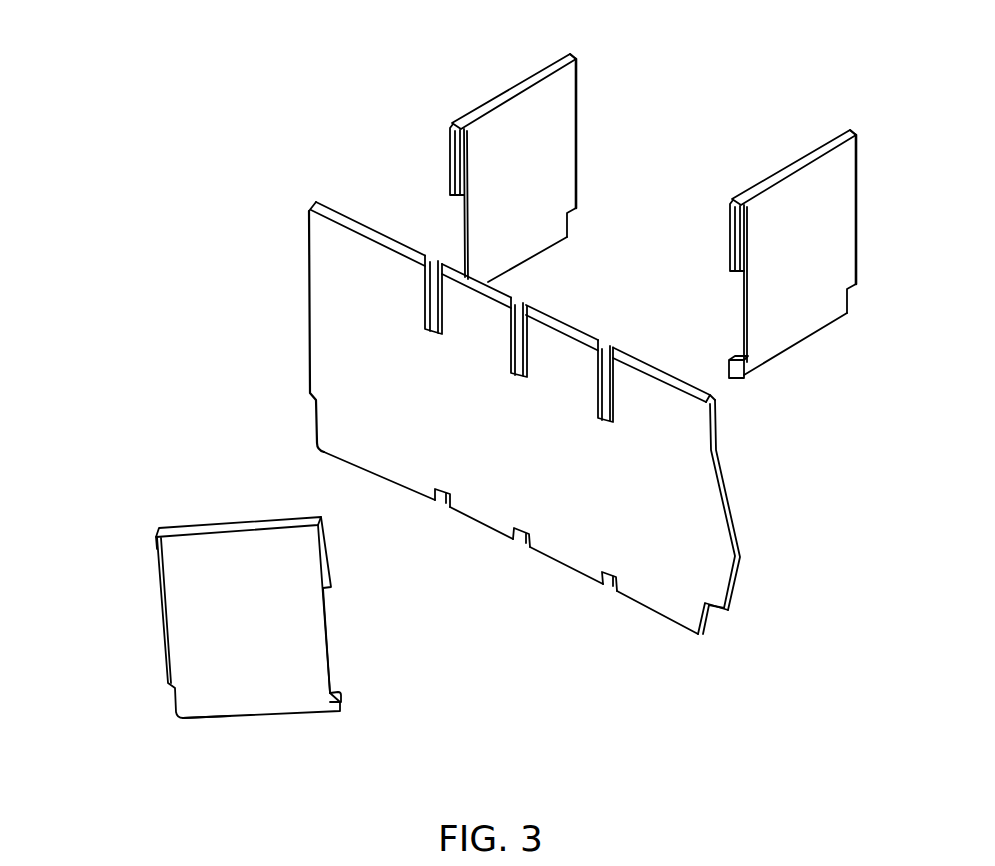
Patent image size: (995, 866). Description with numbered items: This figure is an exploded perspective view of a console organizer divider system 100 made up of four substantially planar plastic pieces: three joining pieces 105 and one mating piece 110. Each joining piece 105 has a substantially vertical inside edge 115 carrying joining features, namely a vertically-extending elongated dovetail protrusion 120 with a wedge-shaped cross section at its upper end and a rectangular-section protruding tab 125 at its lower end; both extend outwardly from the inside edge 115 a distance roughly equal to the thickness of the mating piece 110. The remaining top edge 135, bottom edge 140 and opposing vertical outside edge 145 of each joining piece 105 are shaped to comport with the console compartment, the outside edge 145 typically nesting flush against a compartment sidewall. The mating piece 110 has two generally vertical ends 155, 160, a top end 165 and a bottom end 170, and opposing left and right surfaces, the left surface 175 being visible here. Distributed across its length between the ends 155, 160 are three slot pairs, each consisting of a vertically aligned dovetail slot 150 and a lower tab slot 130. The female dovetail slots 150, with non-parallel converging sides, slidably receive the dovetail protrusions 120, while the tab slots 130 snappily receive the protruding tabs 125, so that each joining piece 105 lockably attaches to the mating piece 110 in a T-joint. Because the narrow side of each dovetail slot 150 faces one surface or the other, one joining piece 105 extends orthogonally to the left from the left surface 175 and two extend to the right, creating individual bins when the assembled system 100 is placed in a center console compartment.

The console organizer divider system 100 is at (242, 84).
The joining piece 105 is at (560, 148).
The mating piece 110 is at (685, 480).
The inside edge 115 is at (457, 212).
The dovetail protrusion 120 is at (449, 140).
The protruding tab 125 is at (745, 368).
The tab slot 130 is at (437, 505).
The top edge 135 is at (515, 88).
The bottom edge 140 is at (552, 246).
The outside edge 145 is at (578, 72).
The dovetail slot 150 is at (598, 378).
The vertical end 155 is at (738, 528).
The vertical end 160 is at (309, 300).
The top end 165 is at (331, 210).
The bottom end 170 is at (388, 479).
The left surface 175 is at (692, 563).